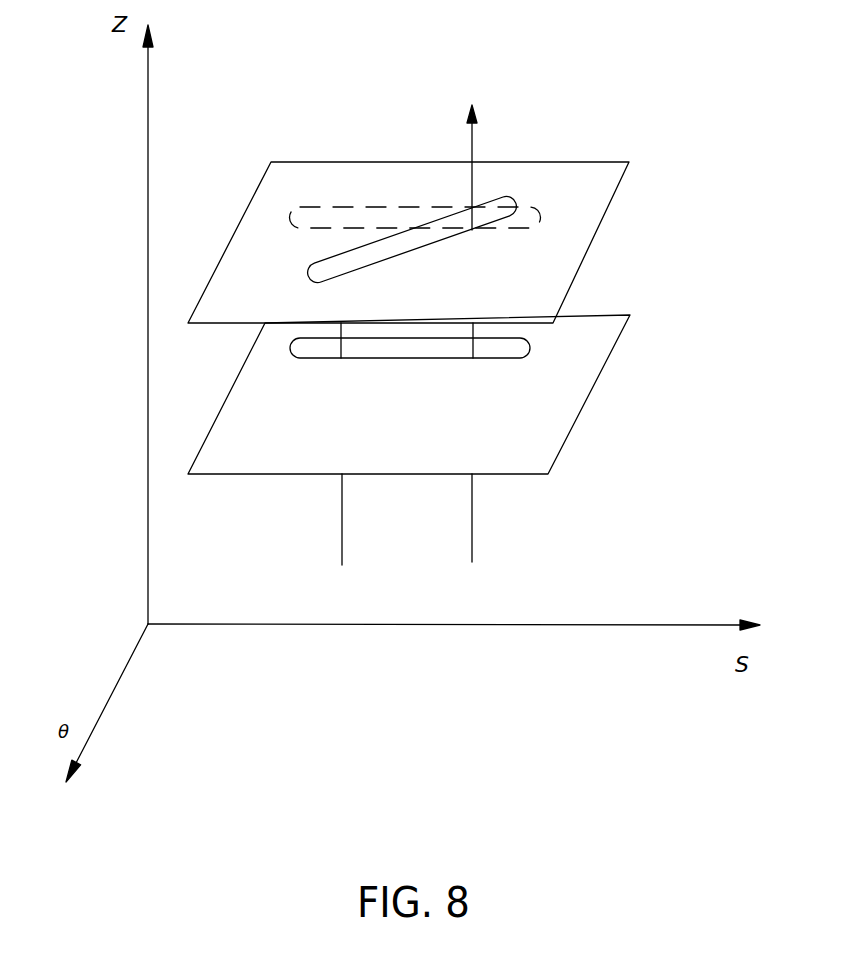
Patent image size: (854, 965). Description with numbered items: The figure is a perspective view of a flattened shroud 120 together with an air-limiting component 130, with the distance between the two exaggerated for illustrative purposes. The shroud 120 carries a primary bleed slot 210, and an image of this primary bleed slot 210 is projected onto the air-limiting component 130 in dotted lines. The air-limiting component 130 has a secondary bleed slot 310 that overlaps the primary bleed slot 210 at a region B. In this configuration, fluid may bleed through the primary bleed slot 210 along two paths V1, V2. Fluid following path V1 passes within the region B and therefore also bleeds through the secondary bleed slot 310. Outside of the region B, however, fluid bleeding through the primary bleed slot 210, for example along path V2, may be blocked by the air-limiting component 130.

The air-limiting component 130 is at (360, 162).
The secondary bleed slot 310 is at (530, 198).
The region B is at (450, 200).
The shroud 120 is at (590, 395).
The primary bleed slot 210 is at (533, 347).
The path V1 is at (475, 542).
The path V2 is at (340, 547).